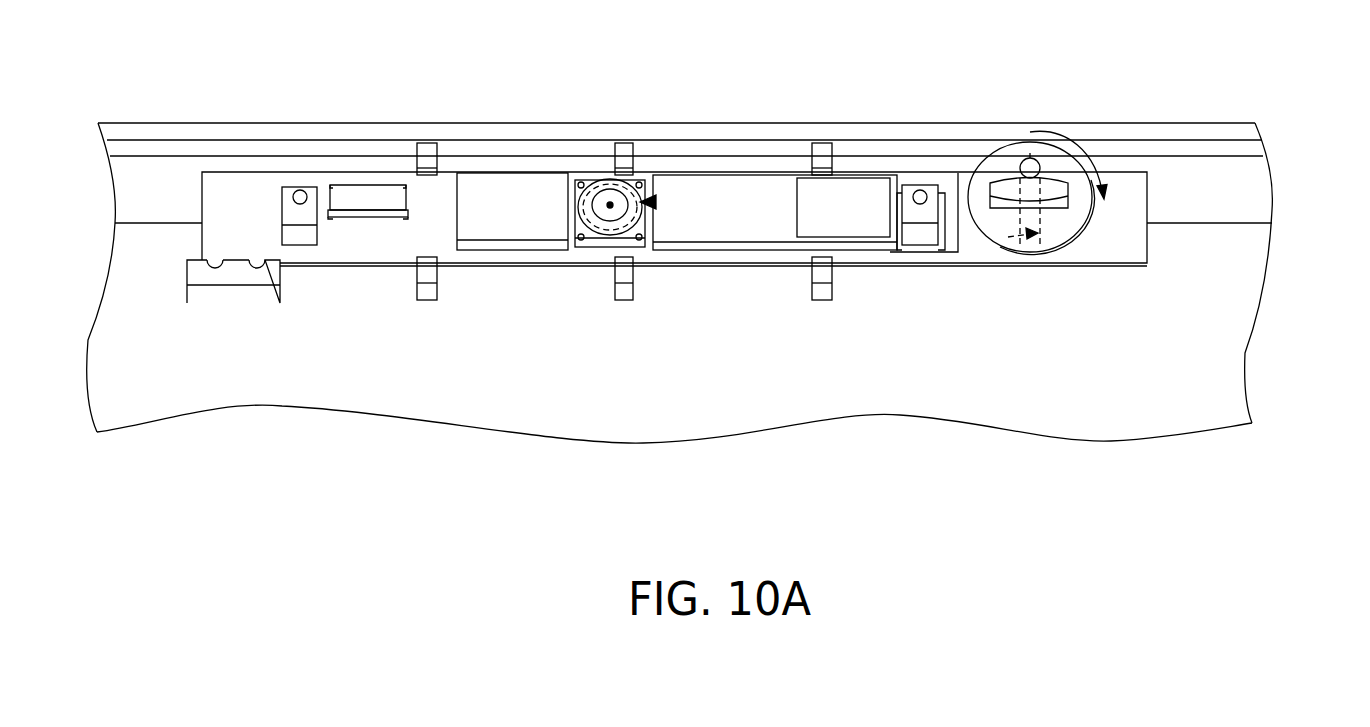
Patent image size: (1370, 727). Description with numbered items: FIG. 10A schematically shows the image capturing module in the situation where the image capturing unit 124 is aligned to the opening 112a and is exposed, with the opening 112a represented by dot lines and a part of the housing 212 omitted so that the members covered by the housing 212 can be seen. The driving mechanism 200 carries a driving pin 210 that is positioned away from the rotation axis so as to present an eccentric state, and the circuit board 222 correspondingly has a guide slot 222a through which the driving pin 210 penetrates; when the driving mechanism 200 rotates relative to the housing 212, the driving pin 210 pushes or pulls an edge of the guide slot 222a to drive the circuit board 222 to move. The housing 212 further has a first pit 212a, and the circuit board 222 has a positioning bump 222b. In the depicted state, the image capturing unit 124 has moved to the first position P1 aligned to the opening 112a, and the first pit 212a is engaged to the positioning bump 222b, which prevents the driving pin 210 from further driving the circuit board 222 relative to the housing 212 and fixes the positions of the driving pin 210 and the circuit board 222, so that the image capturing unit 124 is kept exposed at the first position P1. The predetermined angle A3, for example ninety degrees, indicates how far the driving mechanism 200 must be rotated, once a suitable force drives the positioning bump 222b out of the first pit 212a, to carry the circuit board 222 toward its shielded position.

The housing 212 is at (1210, 370).
The circuit board 222 is at (1135, 202).
The first pit 212a is at (220, 265).
The positioning bump 222b is at (210, 265).
The guide slot 222a is at (259, 266).
The image capturing unit 124 is at (603, 185).
The first position P1 is at (612, 203).
The opening 112a is at (653, 202).
The driving mechanism 200 is at (993, 167).
The driving pin 210 is at (1032, 155).
The predetermined angle A3 is at (1080, 148).